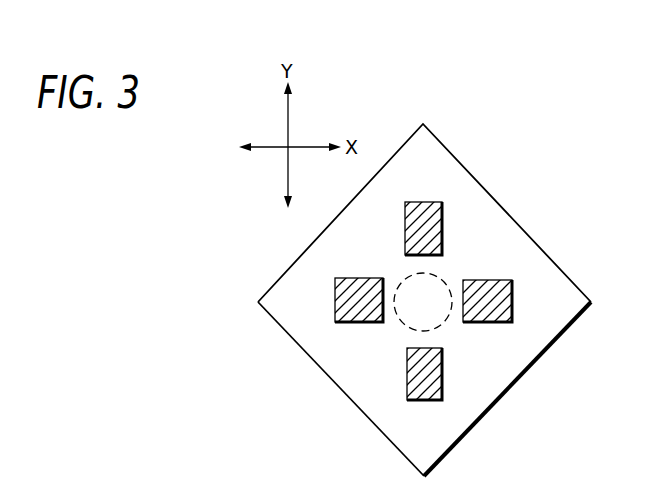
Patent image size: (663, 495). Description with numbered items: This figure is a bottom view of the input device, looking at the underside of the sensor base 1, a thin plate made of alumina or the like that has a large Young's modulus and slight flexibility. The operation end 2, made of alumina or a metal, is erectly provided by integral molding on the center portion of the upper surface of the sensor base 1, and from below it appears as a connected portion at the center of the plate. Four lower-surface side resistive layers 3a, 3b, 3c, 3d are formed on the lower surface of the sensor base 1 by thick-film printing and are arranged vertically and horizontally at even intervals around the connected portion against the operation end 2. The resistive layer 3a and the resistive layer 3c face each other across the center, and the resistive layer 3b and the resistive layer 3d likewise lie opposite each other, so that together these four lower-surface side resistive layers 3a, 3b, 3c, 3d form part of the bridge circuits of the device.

The sensor base 1 is at (485, 218).
The operation end 2 is at (403, 324).
The lower-surface side resistive layer 3a is at (335, 300).
The lower-surface side resistive layer 3b is at (442, 374).
The lower-surface side resistive layer 3c is at (485, 279).
The lower-surface side resistive layer 3d is at (423, 201).